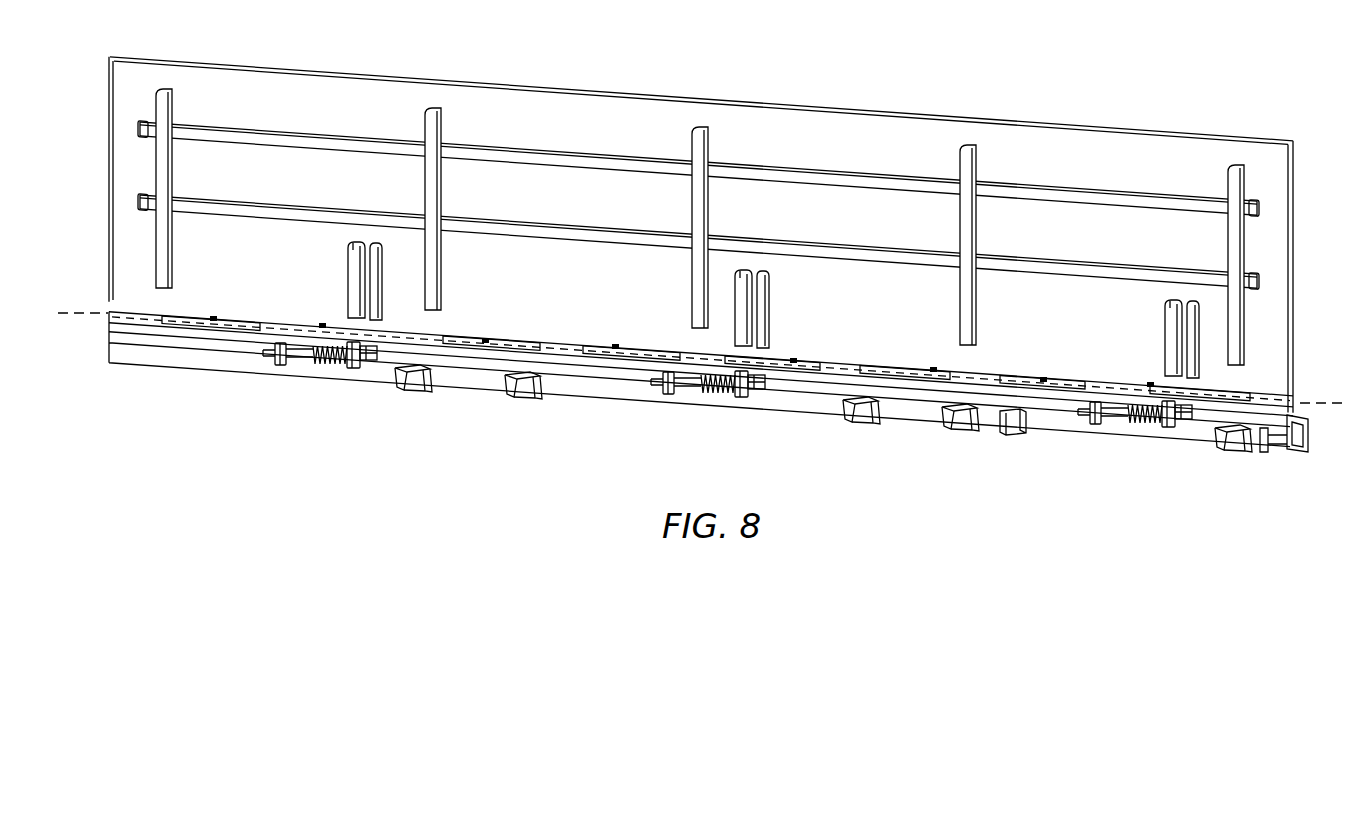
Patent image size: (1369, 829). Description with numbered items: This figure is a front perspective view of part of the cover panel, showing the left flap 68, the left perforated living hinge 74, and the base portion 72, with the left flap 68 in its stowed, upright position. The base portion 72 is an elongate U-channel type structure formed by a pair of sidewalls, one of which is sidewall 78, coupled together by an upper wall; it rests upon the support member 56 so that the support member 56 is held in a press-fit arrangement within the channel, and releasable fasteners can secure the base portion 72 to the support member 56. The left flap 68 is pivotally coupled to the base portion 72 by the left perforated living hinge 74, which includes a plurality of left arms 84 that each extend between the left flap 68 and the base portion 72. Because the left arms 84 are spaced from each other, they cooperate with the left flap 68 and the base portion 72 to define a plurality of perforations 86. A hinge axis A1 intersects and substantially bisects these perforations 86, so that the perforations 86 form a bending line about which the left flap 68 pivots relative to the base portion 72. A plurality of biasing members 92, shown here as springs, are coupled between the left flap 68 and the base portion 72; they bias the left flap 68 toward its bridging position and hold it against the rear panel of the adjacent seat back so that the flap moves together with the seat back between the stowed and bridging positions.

The left flap 68 is at (478, 82).
The left perforated living hinge 74 is at (247, 299).
The base portion 72 is at (470, 397).
The support member 56 is at (1055, 441).
The left arms 84 is at (148, 312).
The perforations 86 is at (213, 315).
The biasing members 92 is at (325, 378).
The sidewall 78 is at (1010, 435).
The hinge axis A1 is at (1330, 407).